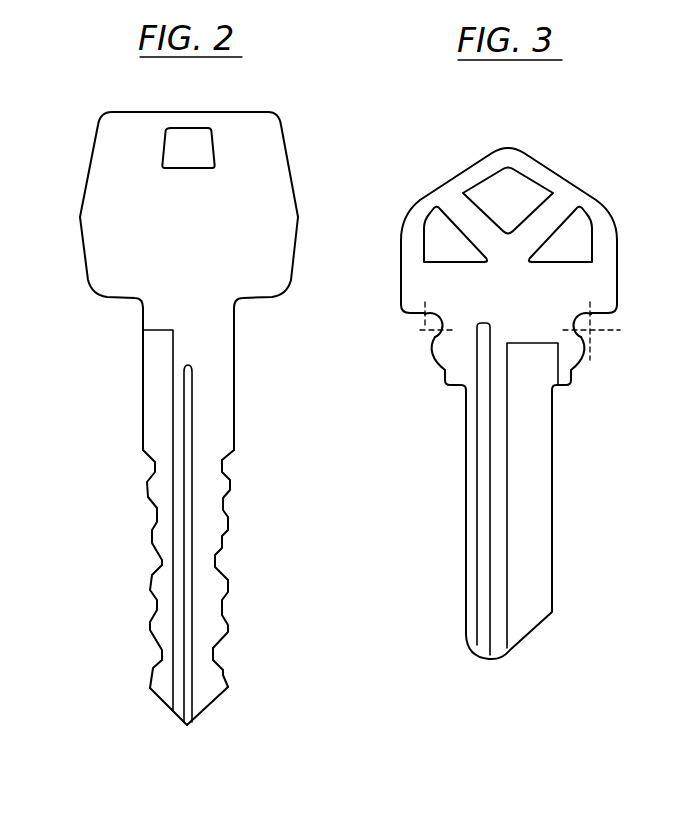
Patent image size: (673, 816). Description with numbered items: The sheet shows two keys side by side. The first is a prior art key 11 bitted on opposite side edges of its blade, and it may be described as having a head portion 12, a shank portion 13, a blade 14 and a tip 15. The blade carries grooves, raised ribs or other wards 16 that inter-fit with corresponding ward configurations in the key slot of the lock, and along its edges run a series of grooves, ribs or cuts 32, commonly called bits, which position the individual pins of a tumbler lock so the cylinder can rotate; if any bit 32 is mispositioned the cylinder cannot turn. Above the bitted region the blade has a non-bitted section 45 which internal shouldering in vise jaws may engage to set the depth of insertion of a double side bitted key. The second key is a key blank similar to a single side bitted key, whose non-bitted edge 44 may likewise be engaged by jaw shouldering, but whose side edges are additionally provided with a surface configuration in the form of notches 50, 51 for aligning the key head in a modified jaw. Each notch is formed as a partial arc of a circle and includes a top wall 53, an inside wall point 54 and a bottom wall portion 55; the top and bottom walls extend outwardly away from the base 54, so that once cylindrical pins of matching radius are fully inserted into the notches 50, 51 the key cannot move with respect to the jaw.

In FIG. 2, the key 11 is at (220, 422).
In FIG. 2, the head portion 12 is at (287, 168).
In FIG. 2, the shank portion 13 is at (234, 324).
In FIG. 2, the blade 14 is at (210, 500).
In FIG. 2, the tip 15 is at (187, 727).
In FIG. 2, the wards 16 is at (177, 703).
In FIG. 2, the bits 32 is at (153, 527).
In FIG. 2, the non-bitted section 45 is at (142, 398).
In FIG. 3, the non-bitted edge 44 is at (502, 403).
In FIG. 3, the notch 50 is at (591, 331).
In FIG. 3, the notch 51 is at (424, 331).
In FIG. 3, the top wall 53 is at (412, 314).
In FIG. 3, the inside wall point 54 is at (425, 330).
In FIG. 3, the bottom wall portion 55 is at (433, 344).